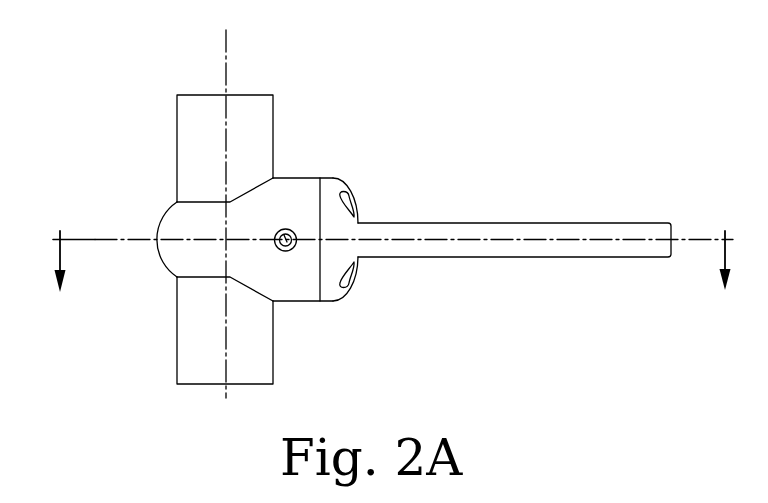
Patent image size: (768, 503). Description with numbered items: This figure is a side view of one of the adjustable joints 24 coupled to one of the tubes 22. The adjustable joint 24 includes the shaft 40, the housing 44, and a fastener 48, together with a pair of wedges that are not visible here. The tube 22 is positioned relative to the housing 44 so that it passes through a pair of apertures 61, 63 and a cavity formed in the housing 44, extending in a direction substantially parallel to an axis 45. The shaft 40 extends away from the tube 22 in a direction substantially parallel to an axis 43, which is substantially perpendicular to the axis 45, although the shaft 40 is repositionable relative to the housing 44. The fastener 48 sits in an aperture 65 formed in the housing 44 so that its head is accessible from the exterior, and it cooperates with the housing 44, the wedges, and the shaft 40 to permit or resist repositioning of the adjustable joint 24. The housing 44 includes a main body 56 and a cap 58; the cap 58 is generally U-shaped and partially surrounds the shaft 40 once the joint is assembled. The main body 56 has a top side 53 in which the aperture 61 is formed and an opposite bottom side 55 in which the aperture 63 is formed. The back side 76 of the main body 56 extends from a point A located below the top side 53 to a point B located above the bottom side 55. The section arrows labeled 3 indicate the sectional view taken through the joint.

The tube 22 is at (262, 112).
The adjustable joint 24 is at (386, 226).
The shaft 40 is at (606, 222).
The axis 43 is at (519, 239).
The housing 44 is at (248, 228).
The axis 45 is at (226, 56).
The fastener 48 is at (284, 229).
The top side 53 is at (298, 178).
The bottom side 55 is at (307, 288).
The main body 56 is at (289, 305).
The cap 58 is at (332, 226).
The aperture 61 is at (244, 201).
The aperture 63 is at (248, 290).
The aperture 65 is at (295, 248).
The back side 76 is at (157, 226).
The point A is at (175, 201).
The point B is at (178, 279).
The section line 3- 3 is at (394, 275).